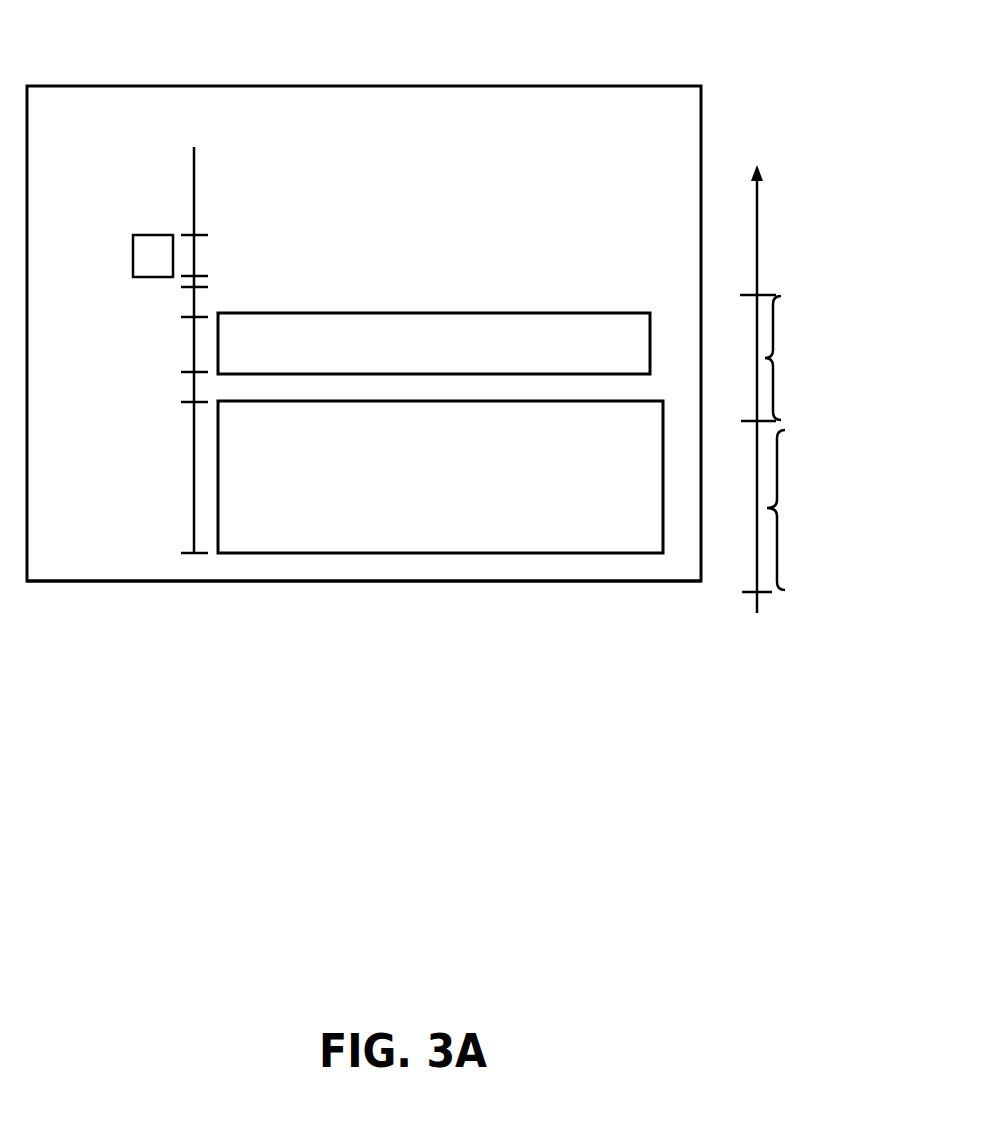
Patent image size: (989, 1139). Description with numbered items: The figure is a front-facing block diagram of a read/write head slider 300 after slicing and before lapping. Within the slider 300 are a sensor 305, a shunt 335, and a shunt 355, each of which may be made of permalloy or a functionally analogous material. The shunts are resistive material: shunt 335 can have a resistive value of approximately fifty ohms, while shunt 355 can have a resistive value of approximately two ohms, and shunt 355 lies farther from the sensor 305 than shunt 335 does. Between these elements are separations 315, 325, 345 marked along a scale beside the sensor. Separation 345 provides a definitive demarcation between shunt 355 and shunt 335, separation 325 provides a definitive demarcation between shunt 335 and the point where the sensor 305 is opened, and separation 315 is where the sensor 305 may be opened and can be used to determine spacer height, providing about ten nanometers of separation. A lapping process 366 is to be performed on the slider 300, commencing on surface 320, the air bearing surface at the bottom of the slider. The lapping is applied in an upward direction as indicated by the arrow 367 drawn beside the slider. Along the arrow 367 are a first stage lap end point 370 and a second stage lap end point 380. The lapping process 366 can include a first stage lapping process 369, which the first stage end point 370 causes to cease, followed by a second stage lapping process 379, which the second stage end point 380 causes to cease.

The read/write head slider 300 is at (137, 84).
The sensor 305 is at (133, 235).
The separation 315 is at (207, 282).
The surface 320 is at (110, 580).
The separation 325 is at (183, 303).
The shunt 335 is at (434, 343).
The separation 345 is at (184, 385).
The shunt 355 is at (440, 477).
The lapping process 366 is at (773, 717).
The arrow 367 is at (757, 200).
The first stage lapping process 369 is at (809, 510).
The first stage lap end point 370 is at (782, 421).
The second stage lapping process 379 is at (817, 358).
The second stage lap end point 380 is at (782, 295).